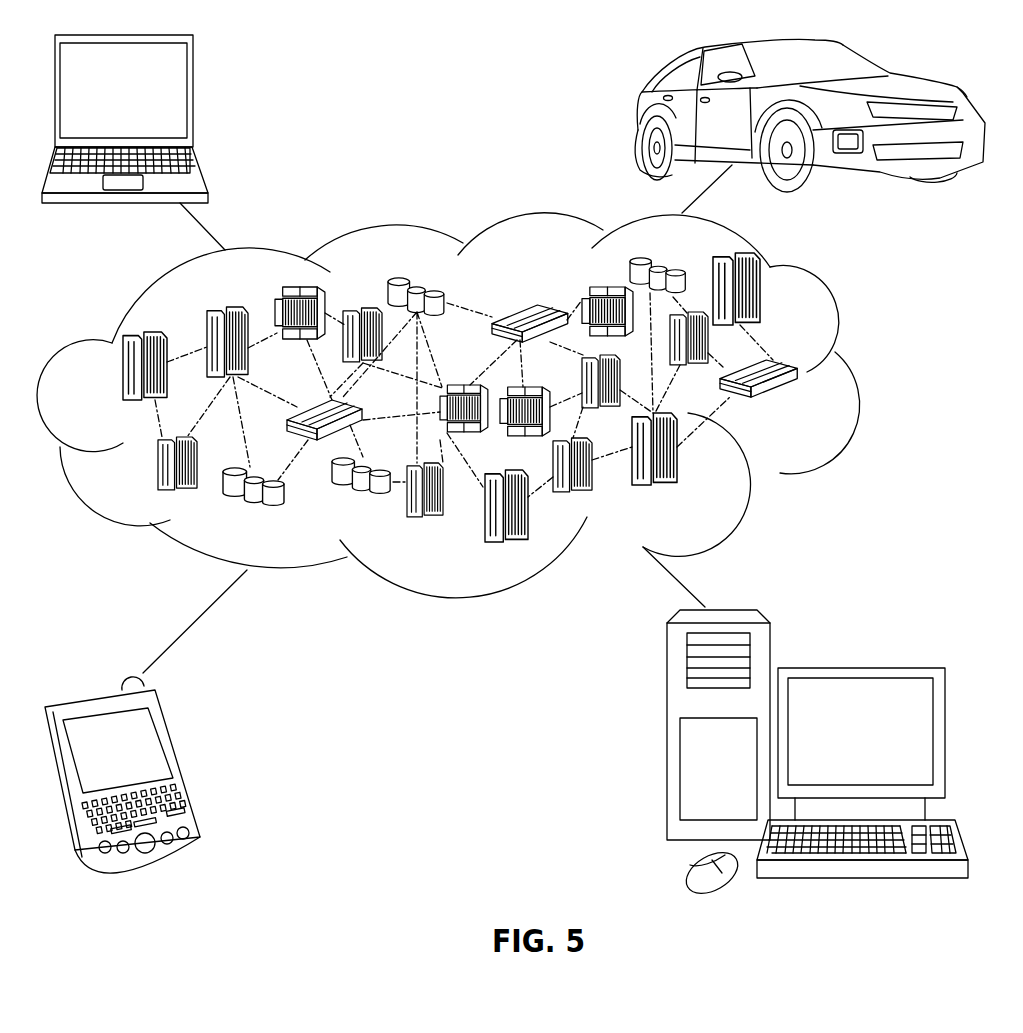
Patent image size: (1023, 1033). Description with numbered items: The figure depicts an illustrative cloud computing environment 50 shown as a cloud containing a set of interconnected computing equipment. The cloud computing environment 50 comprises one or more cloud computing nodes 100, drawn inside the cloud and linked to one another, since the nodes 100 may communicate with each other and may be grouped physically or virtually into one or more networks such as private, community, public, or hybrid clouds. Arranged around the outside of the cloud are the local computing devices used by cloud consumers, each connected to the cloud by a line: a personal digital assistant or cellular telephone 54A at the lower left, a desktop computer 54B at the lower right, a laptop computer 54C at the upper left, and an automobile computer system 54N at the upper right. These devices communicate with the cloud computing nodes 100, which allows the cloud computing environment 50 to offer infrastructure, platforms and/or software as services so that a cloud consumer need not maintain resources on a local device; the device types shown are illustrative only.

The cloud computing environment 50 is at (857, 375).
The cloud computing nodes 100 is at (798, 407).
The personal digital assistant or cellular telephone 54A is at (182, 767).
The desktop computer 54B is at (858, 667).
The laptop computer 54C is at (195, 99).
The automobile computer system 54N is at (633, 113).